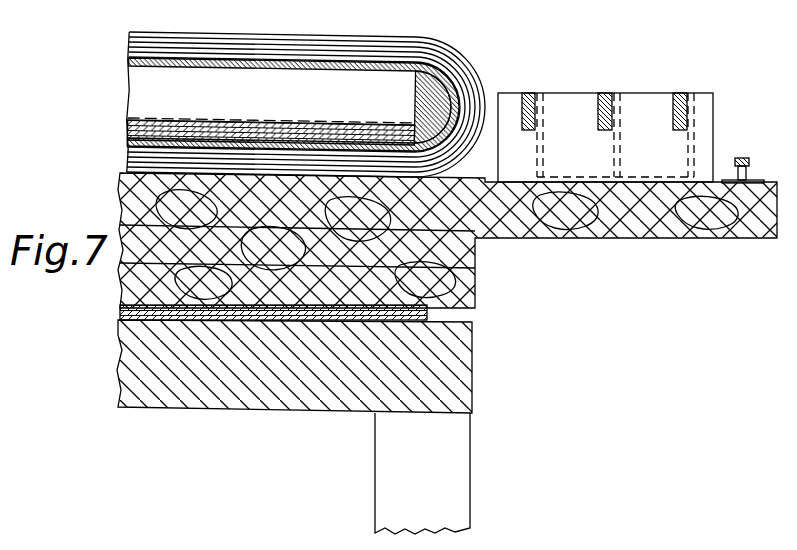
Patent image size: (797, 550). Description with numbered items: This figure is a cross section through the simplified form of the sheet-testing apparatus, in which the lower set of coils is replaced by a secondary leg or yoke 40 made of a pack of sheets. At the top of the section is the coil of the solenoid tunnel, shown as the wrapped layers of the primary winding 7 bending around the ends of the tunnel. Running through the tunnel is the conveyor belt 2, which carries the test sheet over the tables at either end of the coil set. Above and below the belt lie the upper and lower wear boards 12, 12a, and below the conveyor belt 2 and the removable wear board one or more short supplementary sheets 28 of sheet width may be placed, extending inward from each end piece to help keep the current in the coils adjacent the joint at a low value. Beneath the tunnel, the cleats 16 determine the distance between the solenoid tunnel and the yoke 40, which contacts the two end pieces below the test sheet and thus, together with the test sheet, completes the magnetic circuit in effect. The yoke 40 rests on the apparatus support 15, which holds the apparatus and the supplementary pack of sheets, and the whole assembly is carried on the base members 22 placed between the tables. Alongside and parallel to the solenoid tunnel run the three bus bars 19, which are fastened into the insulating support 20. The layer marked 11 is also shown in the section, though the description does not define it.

The primary winding 7 is at (385, 40).
The upper wear board 12 is at (351, 70).
The lower wear board 12a is at (447, 157).
The conveyor belt 2 is at (252, 120).
The lower hatched layer 11 is at (301, 121).
The short supplementary sheets 28 is at (442, 139).
The bus bars 19 is at (680, 93).
The insulating support 20 is at (698, 128).
The cleats 16 is at (478, 262).
The yoke 40 is at (430, 313).
The apparatus support 15 is at (465, 360).
The base members 22 is at (468, 420).